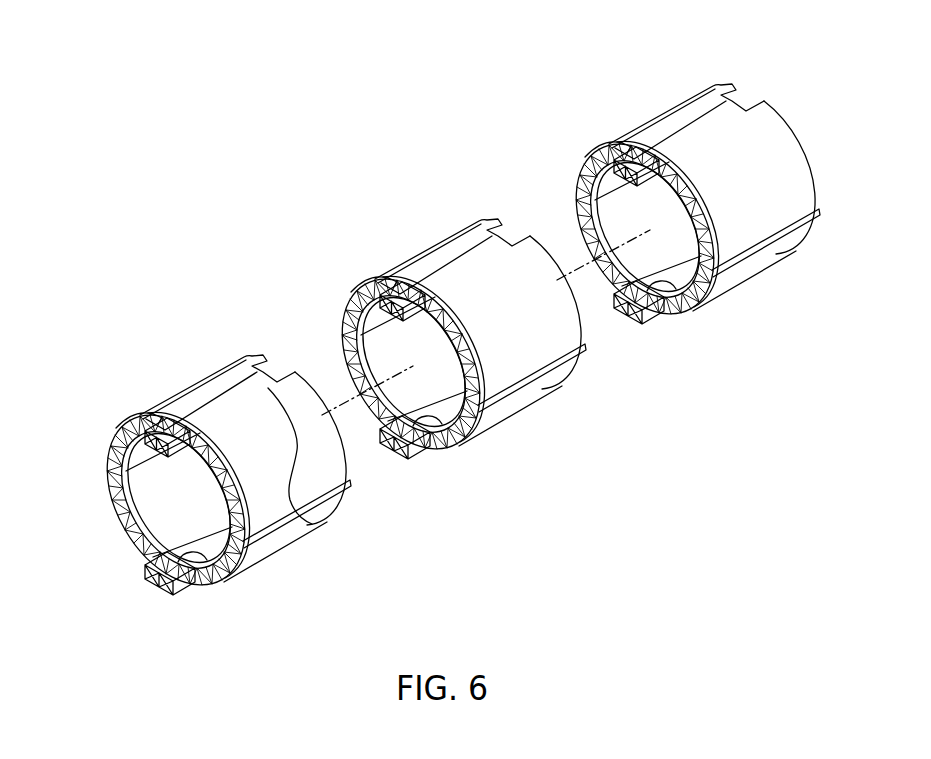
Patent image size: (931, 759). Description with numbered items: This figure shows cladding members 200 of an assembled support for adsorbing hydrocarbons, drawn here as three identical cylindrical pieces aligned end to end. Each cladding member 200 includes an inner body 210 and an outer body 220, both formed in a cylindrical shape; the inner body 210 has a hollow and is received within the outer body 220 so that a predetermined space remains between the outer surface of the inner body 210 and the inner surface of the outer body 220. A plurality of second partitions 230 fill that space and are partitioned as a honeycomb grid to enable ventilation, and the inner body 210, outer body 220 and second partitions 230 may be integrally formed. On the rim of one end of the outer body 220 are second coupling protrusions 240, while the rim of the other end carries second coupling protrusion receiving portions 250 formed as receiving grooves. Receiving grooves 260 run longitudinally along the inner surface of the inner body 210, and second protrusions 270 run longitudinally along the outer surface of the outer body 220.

The cladding member 200 is at (446, 320).
The inner body 210 is at (123, 523).
The outer body 220 is at (143, 418).
The second partition 230 is at (117, 462).
The second coupling protrusion 240 is at (156, 428).
The second coupling protrusion receiving portion 250 is at (277, 375).
The receiving groove 260 is at (214, 578).
The second protrusion 270 is at (332, 525).